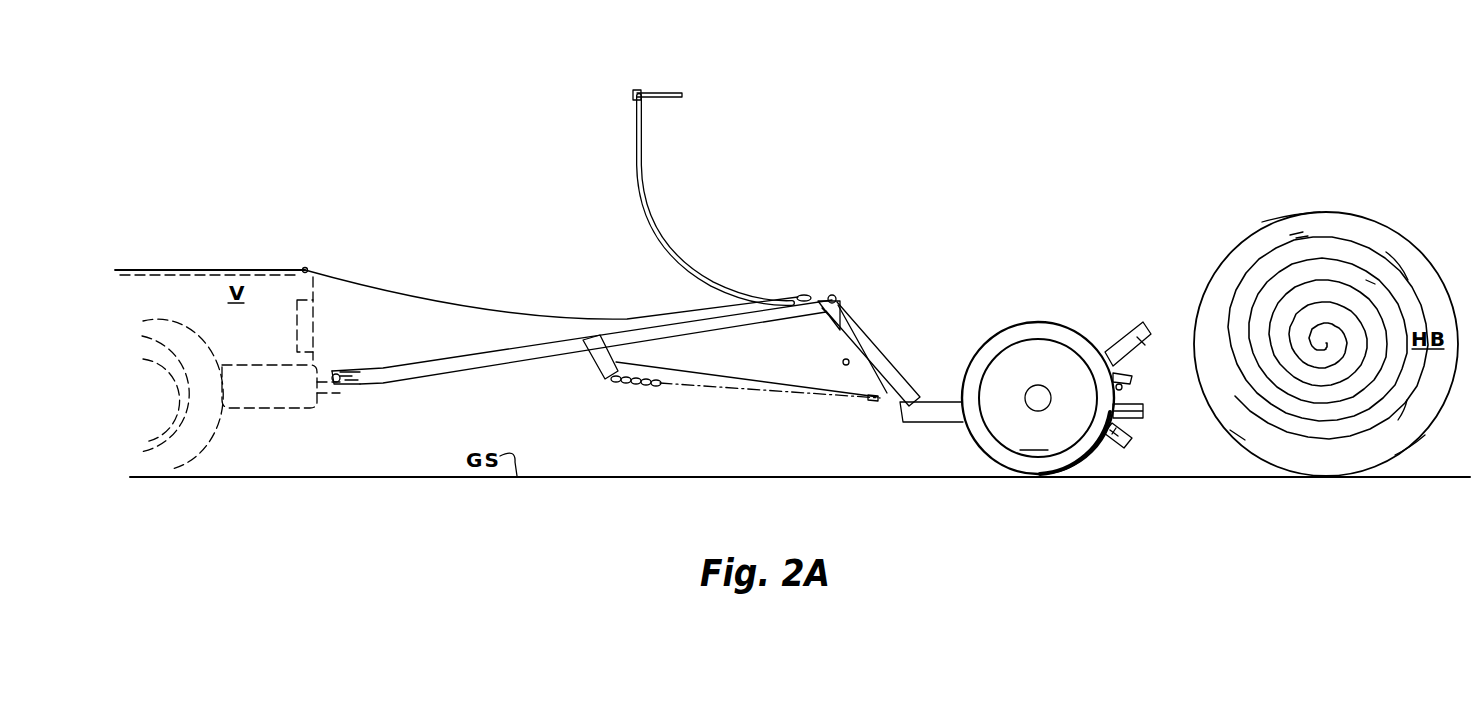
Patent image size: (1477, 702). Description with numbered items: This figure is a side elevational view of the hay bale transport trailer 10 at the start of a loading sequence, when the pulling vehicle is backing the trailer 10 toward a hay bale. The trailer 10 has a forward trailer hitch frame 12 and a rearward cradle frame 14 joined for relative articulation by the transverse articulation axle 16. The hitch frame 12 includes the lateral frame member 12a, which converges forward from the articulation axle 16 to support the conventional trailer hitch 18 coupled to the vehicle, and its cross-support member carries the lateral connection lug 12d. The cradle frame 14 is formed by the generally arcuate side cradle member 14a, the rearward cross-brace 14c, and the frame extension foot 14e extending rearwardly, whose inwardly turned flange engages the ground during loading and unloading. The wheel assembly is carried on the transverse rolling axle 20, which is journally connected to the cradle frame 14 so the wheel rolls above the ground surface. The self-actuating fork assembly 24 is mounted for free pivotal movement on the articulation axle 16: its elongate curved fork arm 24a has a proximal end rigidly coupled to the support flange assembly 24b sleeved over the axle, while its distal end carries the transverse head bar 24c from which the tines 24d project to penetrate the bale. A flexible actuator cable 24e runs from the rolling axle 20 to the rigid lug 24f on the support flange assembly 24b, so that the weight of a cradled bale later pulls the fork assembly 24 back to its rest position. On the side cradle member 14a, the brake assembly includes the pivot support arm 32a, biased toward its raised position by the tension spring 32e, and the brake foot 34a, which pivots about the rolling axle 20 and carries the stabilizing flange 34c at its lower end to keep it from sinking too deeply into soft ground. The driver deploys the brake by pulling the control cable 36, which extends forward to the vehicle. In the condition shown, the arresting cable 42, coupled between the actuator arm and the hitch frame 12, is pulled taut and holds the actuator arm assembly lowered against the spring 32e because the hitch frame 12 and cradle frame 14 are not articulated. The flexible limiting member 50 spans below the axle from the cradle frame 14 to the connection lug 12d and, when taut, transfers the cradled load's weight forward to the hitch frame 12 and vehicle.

The transport trailer 10 is at (936, 120).
The trailer hitch frame 12 is at (582, 372).
The lateral frame member 12a is at (482, 366).
The lateral connection lug 12d is at (602, 362).
The cradle frame 14 is at (865, 357).
The side cradle member 14a is at (936, 412).
The rearward cross-brace 14c is at (1150, 325).
The frame extension foot 14e is at (1143, 411).
The articulation axle 16 is at (842, 296).
The trailer hitch 18 is at (350, 388).
The rolling axle 20 is at (1040, 395).
The self-actuating fork assembly 24 is at (696, 177).
The fork arm 24a is at (642, 152).
The support flange assembly 24b is at (800, 295).
The head bar 24c is at (635, 97).
The tines 24d is at (681, 92).
The actuator cable 24e is at (843, 361).
The rigid lug 24f is at (826, 307).
The pivot support arm 32a is at (1130, 375).
The tension spring 32e is at (1122, 387).
The brake foot 34a is at (1130, 442).
The stabilizing flange 34c is at (1115, 440).
The control cable 36 is at (343, 280).
The arresting cable 42 is at (651, 362).
The flexible limiting member 50 is at (698, 390).